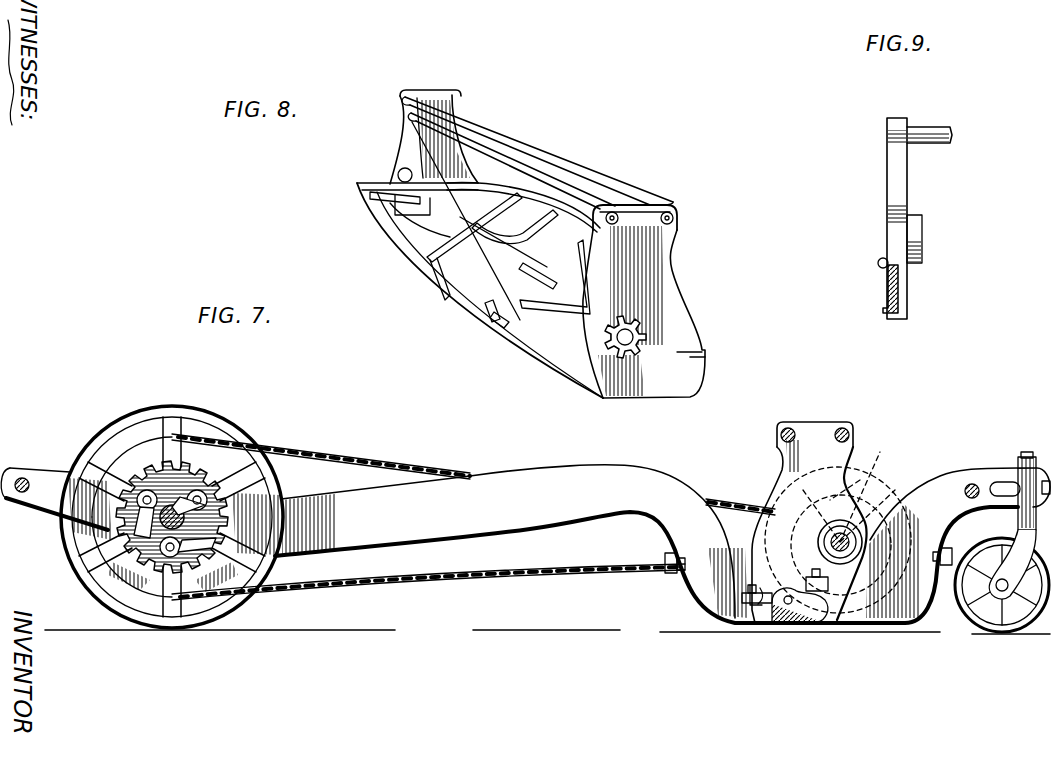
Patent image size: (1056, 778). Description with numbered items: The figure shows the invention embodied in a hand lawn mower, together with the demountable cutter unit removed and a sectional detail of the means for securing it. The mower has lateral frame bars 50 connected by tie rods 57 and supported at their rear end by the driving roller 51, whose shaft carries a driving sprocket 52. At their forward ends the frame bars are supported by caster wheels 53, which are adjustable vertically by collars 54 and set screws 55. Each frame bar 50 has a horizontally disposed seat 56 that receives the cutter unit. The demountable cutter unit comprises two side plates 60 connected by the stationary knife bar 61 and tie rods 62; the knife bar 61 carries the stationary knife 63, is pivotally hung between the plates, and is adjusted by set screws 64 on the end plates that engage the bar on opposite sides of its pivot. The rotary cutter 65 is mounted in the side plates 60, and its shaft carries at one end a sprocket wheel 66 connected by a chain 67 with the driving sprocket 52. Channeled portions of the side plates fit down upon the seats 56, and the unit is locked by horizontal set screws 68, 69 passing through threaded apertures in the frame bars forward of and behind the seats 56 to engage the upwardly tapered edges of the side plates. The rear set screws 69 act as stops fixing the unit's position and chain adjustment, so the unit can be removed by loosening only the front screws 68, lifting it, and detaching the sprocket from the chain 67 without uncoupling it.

In FIG. 7, the lateral frame bar 50 is at (494, 522).
In FIG. 9, the lateral frame bar 50 is at (888, 287).
In FIG. 7, the driving roller 51 is at (186, 630).
In FIG. 7, the driving sprocket 52 is at (143, 440).
In FIG. 7, the caster wheel 53 is at (1010, 634).
In FIG. 7, the collar 54 is at (1008, 486).
In FIG. 7, the set screw 55 is at (1044, 480).
In FIG. 7, the seat 56 is at (745, 605).
In FIG. 9, the seat 56 is at (881, 258).
In FIG. 7, the tie rod 57 is at (20, 495).
In FIG. 7, the side plate 60 is at (786, 458).
In FIG. 8, the side plate 60 is at (404, 112).
In FIG. 9, the side plate 60 is at (890, 170).
In FIG. 7, the stationary knife bar 61 is at (800, 625).
In FIG. 7, the tie rod 62 is at (841, 428).
In FIG. 8, the tie rod 62 is at (530, 170).
In FIG. 9, the tie rod 62 is at (940, 143).
In FIG. 7, the stationary knife 63 is at (840, 624).
In FIG. 7, the set screw 64 is at (815, 577).
In FIG. 7, the rotary cutter 65 is at (878, 470).
In FIG. 8, the rotary cutter 65 is at (488, 316).
In FIG. 8, the sprocket wheel 66 is at (624, 345).
In FIG. 7, the chain 67 is at (306, 446).
In FIG. 7, the front set screw 68 is at (945, 566).
In FIG. 7, the rear set screw 69 is at (672, 573).